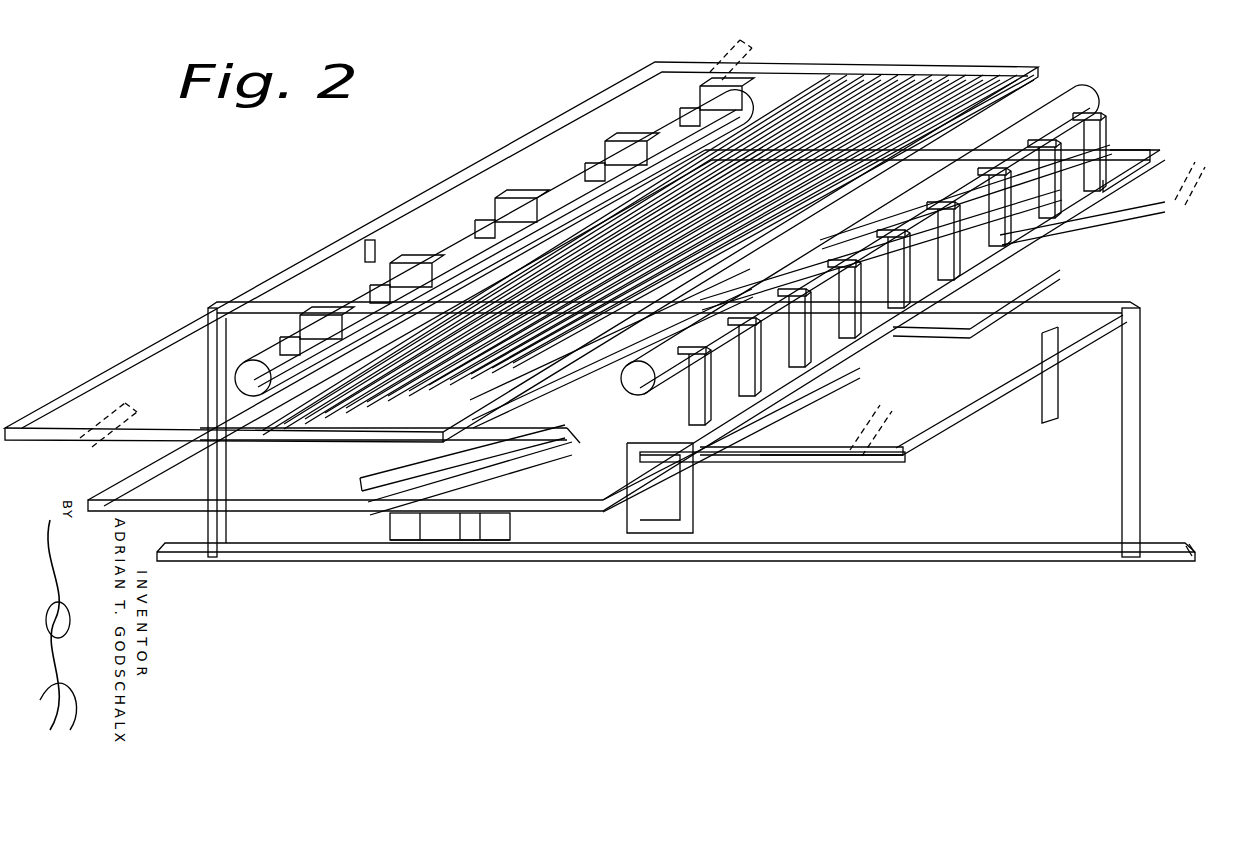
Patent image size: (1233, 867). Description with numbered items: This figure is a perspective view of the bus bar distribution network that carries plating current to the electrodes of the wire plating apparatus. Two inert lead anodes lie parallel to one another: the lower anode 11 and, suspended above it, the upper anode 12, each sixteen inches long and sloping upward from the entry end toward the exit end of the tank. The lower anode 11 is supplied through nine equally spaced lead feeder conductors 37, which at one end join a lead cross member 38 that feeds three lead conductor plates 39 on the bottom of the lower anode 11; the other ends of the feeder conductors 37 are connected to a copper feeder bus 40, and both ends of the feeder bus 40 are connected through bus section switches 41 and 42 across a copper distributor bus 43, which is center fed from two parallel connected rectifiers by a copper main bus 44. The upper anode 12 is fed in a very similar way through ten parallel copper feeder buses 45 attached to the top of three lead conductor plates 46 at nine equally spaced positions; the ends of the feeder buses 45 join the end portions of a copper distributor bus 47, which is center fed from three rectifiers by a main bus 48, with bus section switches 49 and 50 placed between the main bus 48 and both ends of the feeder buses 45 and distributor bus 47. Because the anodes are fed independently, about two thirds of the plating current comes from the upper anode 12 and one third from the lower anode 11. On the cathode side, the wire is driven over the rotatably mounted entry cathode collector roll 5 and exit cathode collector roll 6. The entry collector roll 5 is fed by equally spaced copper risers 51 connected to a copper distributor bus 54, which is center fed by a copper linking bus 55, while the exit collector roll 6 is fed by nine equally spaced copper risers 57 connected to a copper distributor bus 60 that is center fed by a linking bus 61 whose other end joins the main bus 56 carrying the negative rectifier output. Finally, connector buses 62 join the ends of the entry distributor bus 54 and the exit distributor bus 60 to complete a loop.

The cathode collector roll 5 is at (730, 95).
The cathode collector roll 6 is at (1083, 92).
The lower anode 11 is at (578, 440).
The upper anode 12 is at (616, 378).
The feeder conductors 37 is at (1070, 248).
The cross member 38 is at (433, 545).
The conductor plates 39 is at (398, 542).
The feeder bus 40 is at (945, 333).
The bus section switch 41 is at (853, 458).
The bus section switch 42 is at (1160, 216).
The distributor bus 43 is at (955, 415).
The main bus 44 is at (1042, 387).
The feeder buses 45 is at (848, 76).
The conductor plates 46 is at (405, 452).
The distributor bus 47 is at (178, 332).
The main bus 48 is at (378, 240).
The bus section switch 49 is at (104, 446).
The bus section switch 50 is at (760, 70).
The risers 51 is at (300, 322).
The distributor bus 54 is at (148, 440).
The linking bus 55 is at (208, 368).
The main bus 56 is at (790, 560).
The risers 57 is at (1106, 125).
The distributor bus 60 is at (1140, 176).
The linking bus 61 is at (1140, 360).
The connector buses 62 is at (286, 510).